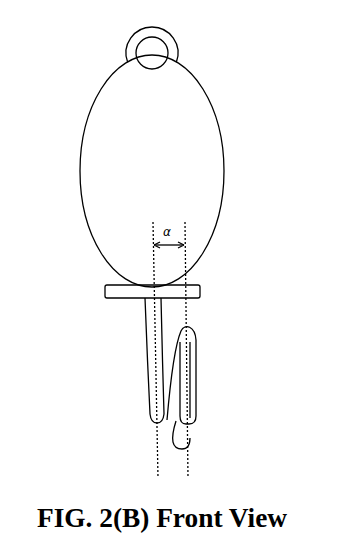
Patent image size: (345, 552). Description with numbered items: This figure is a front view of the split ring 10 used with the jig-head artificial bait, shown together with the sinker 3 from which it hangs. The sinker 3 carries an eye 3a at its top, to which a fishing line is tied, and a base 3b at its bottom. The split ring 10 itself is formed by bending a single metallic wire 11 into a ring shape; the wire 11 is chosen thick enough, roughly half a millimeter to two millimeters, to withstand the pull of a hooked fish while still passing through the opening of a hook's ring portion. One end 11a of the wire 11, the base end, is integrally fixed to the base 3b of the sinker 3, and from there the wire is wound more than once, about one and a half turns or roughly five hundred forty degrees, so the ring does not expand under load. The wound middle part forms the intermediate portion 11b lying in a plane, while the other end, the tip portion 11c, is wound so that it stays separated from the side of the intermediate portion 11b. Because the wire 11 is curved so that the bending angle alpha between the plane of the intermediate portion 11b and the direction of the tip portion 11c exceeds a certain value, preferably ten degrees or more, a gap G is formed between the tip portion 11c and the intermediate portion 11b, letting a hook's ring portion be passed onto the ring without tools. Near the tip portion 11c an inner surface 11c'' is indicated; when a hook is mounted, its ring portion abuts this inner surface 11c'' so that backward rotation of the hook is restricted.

The sinker 3 is at (223, 163).
The eye 3a is at (177, 47).
The base 3b is at (200, 291).
The split ring 10 is at (160, 374).
The wire 11 is at (122, 360).
The one end 11a is at (147, 300).
The intermediate portion 11b is at (149, 402).
The tip portion 11c is at (211, 388).
The inner surface 11c'' is at (215, 435).
The gap G is at (190, 410).